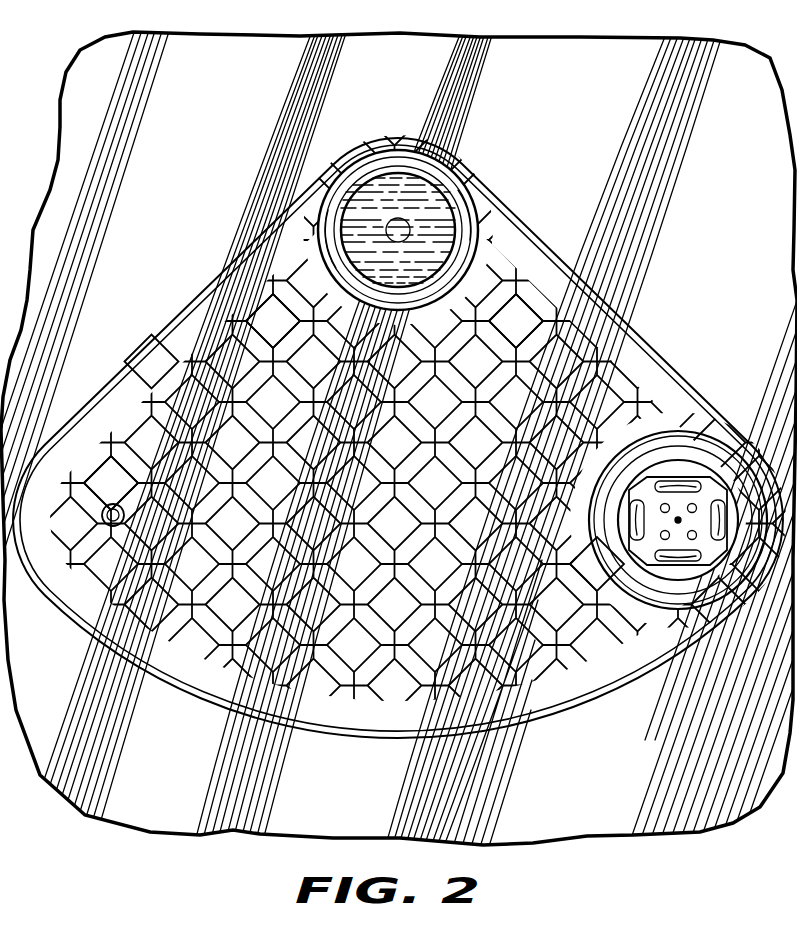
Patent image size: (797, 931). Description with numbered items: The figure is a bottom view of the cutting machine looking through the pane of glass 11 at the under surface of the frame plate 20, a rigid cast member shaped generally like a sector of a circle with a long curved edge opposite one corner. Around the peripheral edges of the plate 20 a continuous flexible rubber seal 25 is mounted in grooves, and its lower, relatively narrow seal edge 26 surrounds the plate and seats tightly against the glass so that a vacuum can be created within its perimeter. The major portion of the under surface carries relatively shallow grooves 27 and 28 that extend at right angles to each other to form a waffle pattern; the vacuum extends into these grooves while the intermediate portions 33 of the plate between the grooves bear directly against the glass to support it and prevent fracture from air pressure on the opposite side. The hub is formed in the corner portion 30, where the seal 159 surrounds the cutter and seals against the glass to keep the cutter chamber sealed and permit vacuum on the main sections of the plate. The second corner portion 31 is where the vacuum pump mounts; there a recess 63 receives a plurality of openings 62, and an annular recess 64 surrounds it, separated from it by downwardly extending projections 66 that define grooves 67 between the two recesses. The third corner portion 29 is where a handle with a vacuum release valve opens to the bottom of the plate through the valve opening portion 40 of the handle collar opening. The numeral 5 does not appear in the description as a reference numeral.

The pane of glass 11 is at (161, 812).
The frame plate 20 is at (323, 697).
The continuous flexible rubber seal 25 is at (197, 697).
The seal edge 26 is at (507, 198).
The grooves 27 is at (290, 304).
The grooves 28 is at (162, 372).
The third corner portion 29 is at (108, 471).
The corner portion 30 is at (313, 207).
The second corner portion 31 is at (676, 416).
The intermediate portions 33 is at (518, 320).
The valve opening portion 40 is at (62, 585).
The openings 62 is at (692, 540).
The recess 63 is at (598, 572).
The annular recess 64 is at (707, 583).
The downwardly extending projections 66 is at (678, 478).
The grooves 67 is at (722, 445).
The seal 159 is at (390, 163).
The reference element 5 is at (4, 183).